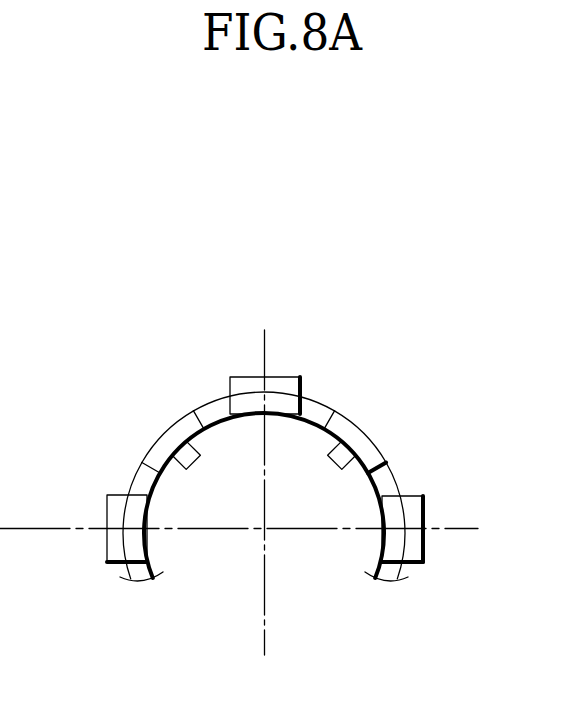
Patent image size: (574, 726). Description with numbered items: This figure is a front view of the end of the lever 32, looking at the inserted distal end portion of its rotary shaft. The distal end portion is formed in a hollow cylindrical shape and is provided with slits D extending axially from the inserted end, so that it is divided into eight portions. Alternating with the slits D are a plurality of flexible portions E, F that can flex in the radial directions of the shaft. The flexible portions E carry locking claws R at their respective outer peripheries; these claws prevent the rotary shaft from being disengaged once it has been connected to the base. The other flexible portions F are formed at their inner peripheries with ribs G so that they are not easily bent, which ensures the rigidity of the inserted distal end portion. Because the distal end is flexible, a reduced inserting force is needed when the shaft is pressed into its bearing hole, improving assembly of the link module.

The lever 32 is at (417, 276).
The slits D is at (212, 403).
The flexible portions E is at (132, 515).
The flexible portions F is at (170, 440).
The ribs G is at (197, 467).
The locking claws R is at (245, 385).